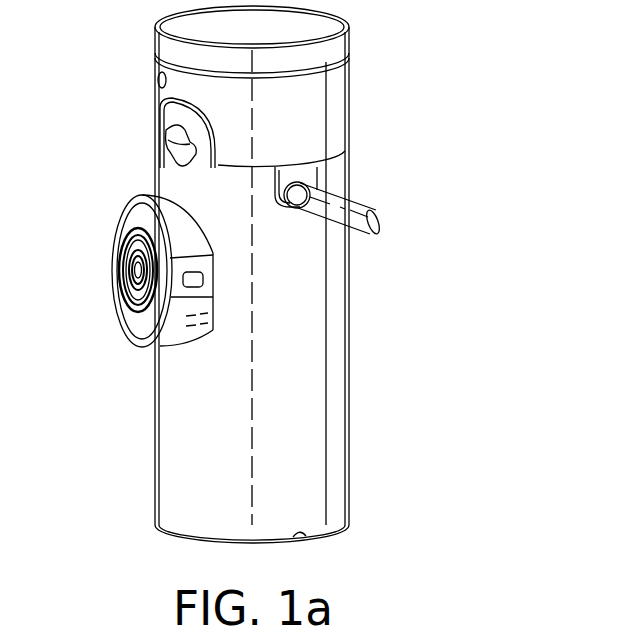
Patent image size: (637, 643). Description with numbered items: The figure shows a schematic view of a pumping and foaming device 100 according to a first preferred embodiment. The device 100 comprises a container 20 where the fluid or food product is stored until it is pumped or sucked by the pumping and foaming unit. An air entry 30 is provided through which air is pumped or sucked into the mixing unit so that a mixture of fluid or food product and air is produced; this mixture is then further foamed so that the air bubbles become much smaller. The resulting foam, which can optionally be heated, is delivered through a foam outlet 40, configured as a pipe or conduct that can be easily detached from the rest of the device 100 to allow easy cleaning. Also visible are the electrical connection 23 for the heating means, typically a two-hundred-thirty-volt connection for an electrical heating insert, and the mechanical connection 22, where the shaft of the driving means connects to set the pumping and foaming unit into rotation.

The foaming device 100 is at (408, 62).
The container 20 is at (334, 428).
The mechanical connection 22 is at (160, 143).
The electrical connection 23 is at (112, 262).
The air entry 30 is at (158, 80).
The foam outlet 40 is at (373, 212).